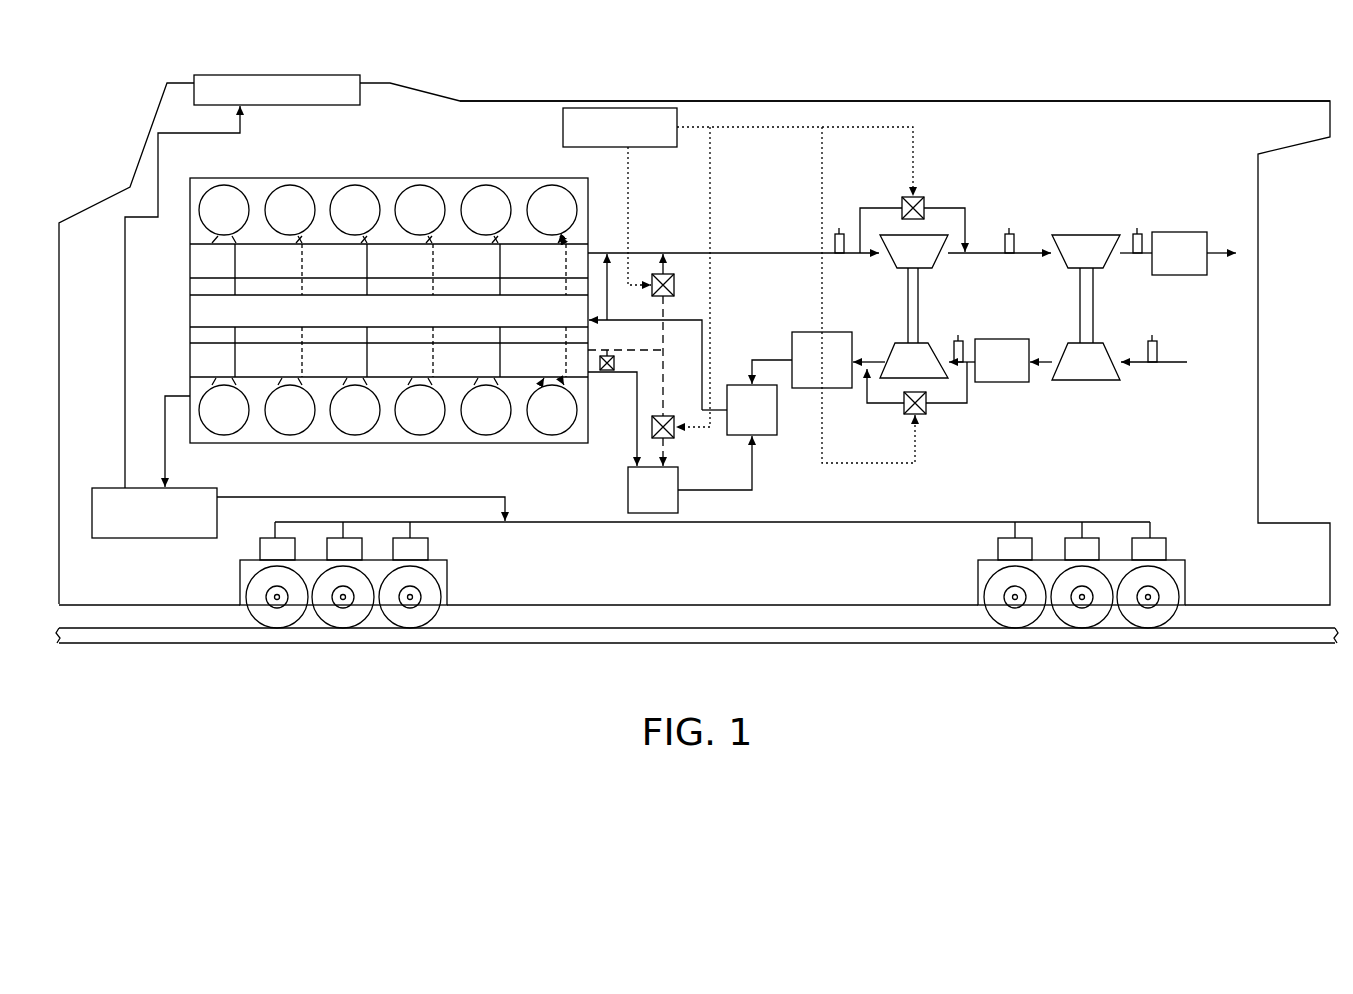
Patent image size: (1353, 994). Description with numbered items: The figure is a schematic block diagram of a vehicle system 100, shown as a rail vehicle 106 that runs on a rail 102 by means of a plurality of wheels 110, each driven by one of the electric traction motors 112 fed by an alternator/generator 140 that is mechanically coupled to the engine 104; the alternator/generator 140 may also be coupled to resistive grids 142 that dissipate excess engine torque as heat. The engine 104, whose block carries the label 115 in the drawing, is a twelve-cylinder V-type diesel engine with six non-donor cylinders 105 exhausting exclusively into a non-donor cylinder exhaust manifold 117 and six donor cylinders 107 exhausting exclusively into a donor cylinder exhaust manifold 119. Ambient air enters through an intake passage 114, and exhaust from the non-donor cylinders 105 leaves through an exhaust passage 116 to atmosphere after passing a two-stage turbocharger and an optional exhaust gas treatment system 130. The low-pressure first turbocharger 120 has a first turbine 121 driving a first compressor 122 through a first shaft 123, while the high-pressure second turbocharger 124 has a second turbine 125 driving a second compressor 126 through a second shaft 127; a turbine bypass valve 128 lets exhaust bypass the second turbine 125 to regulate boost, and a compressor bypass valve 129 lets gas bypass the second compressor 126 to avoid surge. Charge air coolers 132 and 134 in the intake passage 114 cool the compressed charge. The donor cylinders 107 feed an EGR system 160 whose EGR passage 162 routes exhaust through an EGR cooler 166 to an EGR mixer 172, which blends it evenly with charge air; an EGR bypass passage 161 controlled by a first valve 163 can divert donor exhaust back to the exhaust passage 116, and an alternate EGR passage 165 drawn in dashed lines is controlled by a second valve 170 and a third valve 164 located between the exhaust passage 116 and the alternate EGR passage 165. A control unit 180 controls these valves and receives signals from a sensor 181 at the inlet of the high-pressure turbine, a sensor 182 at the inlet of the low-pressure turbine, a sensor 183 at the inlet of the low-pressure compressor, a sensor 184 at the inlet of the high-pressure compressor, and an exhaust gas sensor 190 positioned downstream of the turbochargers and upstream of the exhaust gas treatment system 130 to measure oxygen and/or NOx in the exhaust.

The vehicle system 100 is at (694, 319).
The rail 102 is at (1250, 645).
The engine 104 is at (365, 304).
The non-donor cylinders 105 is at (355, 187).
The rail vehicle 106 is at (1015, 101).
The donor cylinders 107 is at (355, 435).
The wheels 110 is at (430, 586).
The electric traction motors 112 is at (430, 544).
The intake passage 114 is at (1138, 364).
The engine 115 is at (389, 310).
The exhaust passage 116 is at (745, 253).
The non-donor cylinder exhaust manifold 117 is at (190, 260).
The donor cylinder exhaust manifold 119 is at (190, 358).
The first turbocharger 120 is at (1106, 332).
The first turbine 121 is at (1086, 251).
The first compressor 122 is at (1086, 361).
The first shaft 123 is at (1095, 325).
The second turbocharger 124 is at (947, 421).
The second turbine 125 is at (914, 251).
The second compressor 126 is at (914, 360).
The second shaft 127 is at (918, 325).
The turbine bypass valve 128 is at (925, 200).
The compressor bypass valve 129 is at (904, 410).
The exhaust gas treatment system 130 is at (1178, 253).
The charge air cooler 132 is at (1000, 360).
The charge air cooler 134 is at (838, 360).
The alternator/generator 140 is at (298, 467).
The resistive grids 142 is at (355, 75).
The EGR system 160 is at (736, 383).
The EGR bypass passage 161 is at (607, 272).
The EGR passage 162 is at (637, 395).
The first valve 163 is at (609, 356).
The third valve 164 is at (674, 284).
The alternate EGR passage 165 is at (663, 350).
The EGR cooler 166 is at (690, 474).
The second valve 170 is at (670, 440).
The EGR mixer 172 is at (690, 377).
The control unit 180 is at (739, 285).
The sensor 181 is at (840, 226).
The sensor 182 is at (1011, 226).
The sensor 183 is at (1154, 335).
The sensor 184 is at (960, 335).
The exhaust gas sensor 190 is at (1137, 228).